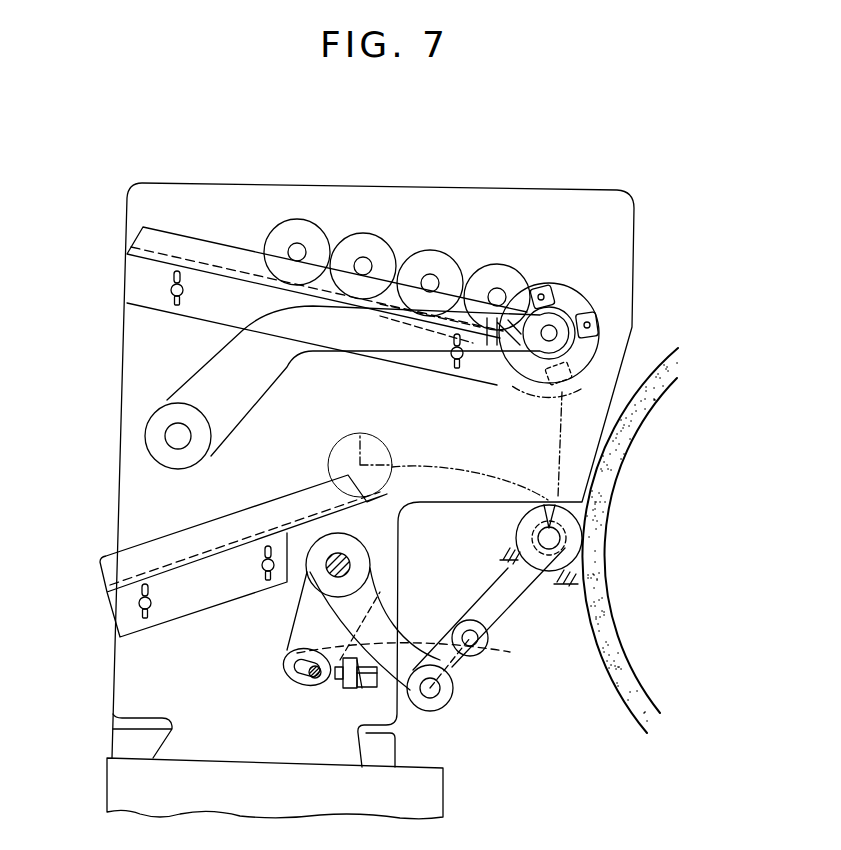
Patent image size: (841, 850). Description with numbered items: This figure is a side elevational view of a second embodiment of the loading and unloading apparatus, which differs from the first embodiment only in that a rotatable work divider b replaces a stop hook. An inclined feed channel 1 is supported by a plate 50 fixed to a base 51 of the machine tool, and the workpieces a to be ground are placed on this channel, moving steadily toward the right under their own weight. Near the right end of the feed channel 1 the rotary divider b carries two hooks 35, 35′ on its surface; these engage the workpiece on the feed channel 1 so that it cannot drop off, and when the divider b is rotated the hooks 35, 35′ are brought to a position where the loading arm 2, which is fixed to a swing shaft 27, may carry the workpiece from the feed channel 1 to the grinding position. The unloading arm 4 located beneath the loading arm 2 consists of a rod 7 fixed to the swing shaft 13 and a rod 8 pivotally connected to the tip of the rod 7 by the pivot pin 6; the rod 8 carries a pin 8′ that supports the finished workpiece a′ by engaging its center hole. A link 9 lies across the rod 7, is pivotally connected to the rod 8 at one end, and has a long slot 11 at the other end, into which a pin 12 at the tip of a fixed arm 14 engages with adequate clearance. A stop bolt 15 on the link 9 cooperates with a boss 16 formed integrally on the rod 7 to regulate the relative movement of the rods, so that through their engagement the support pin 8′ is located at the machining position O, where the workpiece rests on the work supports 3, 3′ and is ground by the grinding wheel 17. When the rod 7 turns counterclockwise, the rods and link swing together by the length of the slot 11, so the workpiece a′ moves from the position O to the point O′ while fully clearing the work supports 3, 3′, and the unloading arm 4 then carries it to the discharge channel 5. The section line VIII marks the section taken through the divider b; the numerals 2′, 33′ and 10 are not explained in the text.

The inclined feed channel 1 is at (150, 243).
The loading arm 2 is at (218, 368).
The pivot axis of arm 2′ is at (545, 340).
The work support 3 is at (500, 543).
The work support 3′ is at (558, 573).
The unloading arm 4 is at (492, 645).
The discharge channel 5 is at (190, 543).
The pivot pin 6 is at (438, 692).
The rod 7 is at (380, 593).
The rod 8 is at (513, 613).
The pin 8′ is at (567, 533).
The link 9 is at (342, 688).
The roller 10 is at (470, 642).
The long slot 11 is at (300, 667).
The pin 12 is at (313, 675).
The swing shaft 13 is at (349, 556).
The fixed arm 14 is at (297, 617).
The stop bolt 15 is at (360, 683).
The boss 16 is at (379, 686).
The grinding wheel 17 is at (608, 658).
The swing shaft 27 is at (193, 438).
The bearing housing 33′ is at (600, 314).
The hook 35 is at (540, 287).
The hook 35′ is at (570, 388).
The plate 50 is at (167, 193).
The base 51 is at (122, 783).
The machining position O is at (567, 542).
The point O′ is at (560, 495).
The workpiece a is at (479, 275).
The workpiece a′ is at (517, 520).
The work divider b is at (560, 283).
The section line VIII- VIII is at (553, 282).